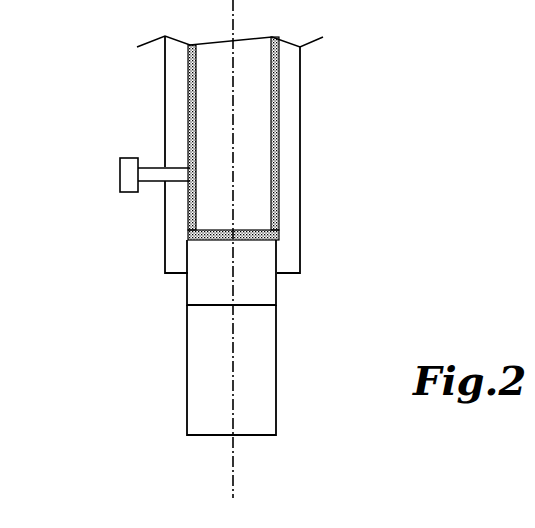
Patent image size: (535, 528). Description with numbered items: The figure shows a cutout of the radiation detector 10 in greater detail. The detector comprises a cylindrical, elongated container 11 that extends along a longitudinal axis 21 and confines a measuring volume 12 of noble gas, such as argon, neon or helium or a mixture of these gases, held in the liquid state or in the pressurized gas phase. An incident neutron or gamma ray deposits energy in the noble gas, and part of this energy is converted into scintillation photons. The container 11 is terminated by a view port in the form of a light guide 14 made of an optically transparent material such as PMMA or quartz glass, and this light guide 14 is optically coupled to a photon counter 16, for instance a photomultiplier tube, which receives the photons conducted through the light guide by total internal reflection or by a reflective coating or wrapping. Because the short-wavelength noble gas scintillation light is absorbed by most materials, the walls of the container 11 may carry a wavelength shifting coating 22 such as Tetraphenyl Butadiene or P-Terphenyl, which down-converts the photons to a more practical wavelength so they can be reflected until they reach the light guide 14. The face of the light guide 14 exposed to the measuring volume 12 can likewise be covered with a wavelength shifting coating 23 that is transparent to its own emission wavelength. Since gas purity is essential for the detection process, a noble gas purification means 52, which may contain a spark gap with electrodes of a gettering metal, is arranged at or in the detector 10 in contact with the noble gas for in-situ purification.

The radiation detector 10 is at (363, 55).
The container 11 is at (290, 115).
The measuring volume 12 is at (220, 85).
The light guide 14 is at (215, 282).
The photon counter 16 is at (205, 387).
The longitudinal axis 21 is at (230, 474).
The wavelength shifting coating 22 is at (278, 173).
The wavelength shifting coating 23 is at (278, 238).
The noble gas purification means 52 is at (130, 173).